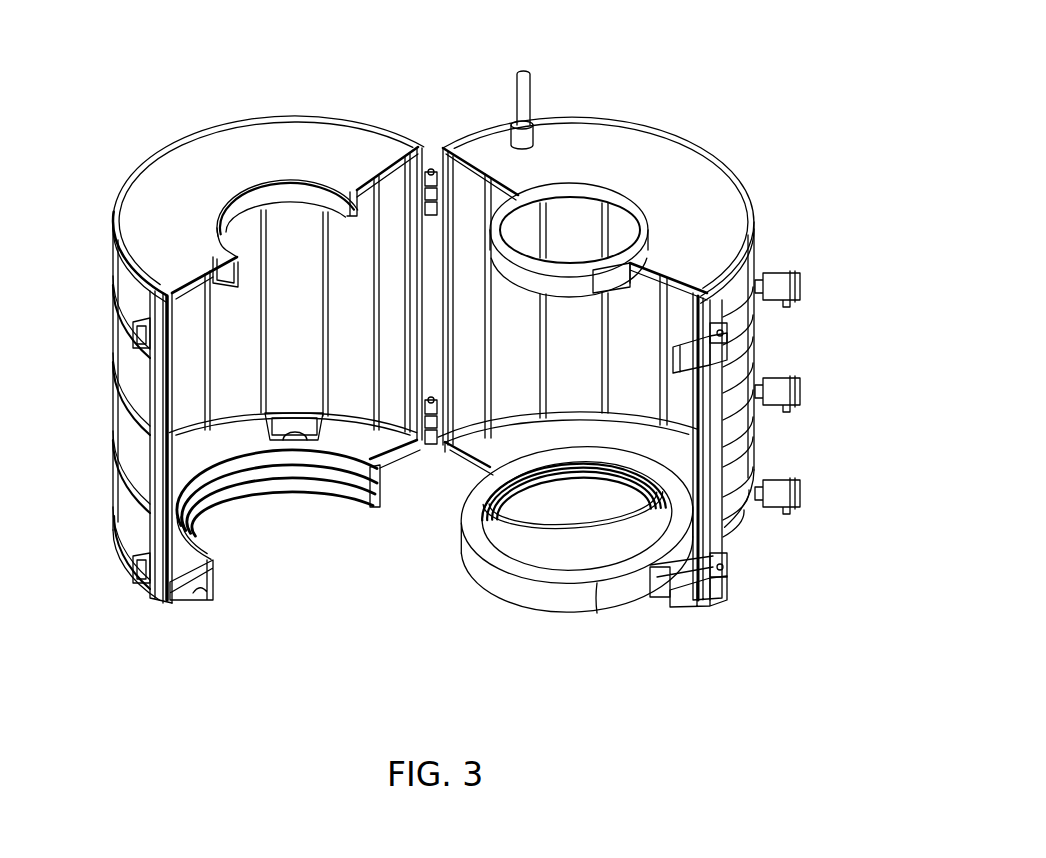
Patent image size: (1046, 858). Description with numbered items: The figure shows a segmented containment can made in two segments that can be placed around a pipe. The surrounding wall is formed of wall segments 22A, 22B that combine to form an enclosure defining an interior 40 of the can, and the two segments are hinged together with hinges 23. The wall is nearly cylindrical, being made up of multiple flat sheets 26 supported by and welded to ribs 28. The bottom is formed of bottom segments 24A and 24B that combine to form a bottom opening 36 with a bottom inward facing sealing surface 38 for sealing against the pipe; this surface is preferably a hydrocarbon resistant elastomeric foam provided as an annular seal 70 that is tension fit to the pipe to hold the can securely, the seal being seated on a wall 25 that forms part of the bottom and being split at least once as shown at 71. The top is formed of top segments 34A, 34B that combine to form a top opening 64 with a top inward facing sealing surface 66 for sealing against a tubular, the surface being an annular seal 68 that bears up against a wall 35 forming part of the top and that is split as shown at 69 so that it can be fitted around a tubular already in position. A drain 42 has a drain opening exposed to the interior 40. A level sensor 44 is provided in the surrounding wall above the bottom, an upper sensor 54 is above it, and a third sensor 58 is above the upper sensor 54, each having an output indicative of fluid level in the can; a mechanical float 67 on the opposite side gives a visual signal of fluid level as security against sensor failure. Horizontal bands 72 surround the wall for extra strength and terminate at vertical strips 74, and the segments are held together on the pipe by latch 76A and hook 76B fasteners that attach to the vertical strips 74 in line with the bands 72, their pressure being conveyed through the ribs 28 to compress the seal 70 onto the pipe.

The wall segment 22A is at (693, 138).
The wall segment 22B is at (267, 113).
The hinges 23 is at (432, 172).
The bottom segment 24A is at (675, 458).
The bottom segment 24B is at (193, 458).
The wall 25 is at (203, 593).
The flat sheets 26 is at (327, 210).
The ribs 28 is at (203, 403).
The top segment 34A is at (600, 140).
The top segment 34B is at (143, 205).
The wall 35 is at (345, 250).
The bottom opening 36 is at (262, 544).
The bottom inward facing sealing surface 38 is at (356, 493).
The interior 40 is at (277, 330).
The drain 42 is at (295, 440).
The level sensor 44 is at (793, 510).
The upper sensor 54 is at (800, 393).
The third sensor 58 is at (800, 288).
The top opening 64 is at (269, 256).
The top inward facing sealing surface 66 is at (233, 203).
The mechanical float 67 is at (523, 90).
The annular seal 68 is at (560, 285).
The split 69 is at (603, 280).
The annular seal 70 is at (497, 580).
The split 71 is at (593, 593).
The horizontal bands 72 is at (113, 375).
The vertical strips 74 is at (160, 597).
The latch 76A is at (713, 353).
The hook 76B is at (133, 335).